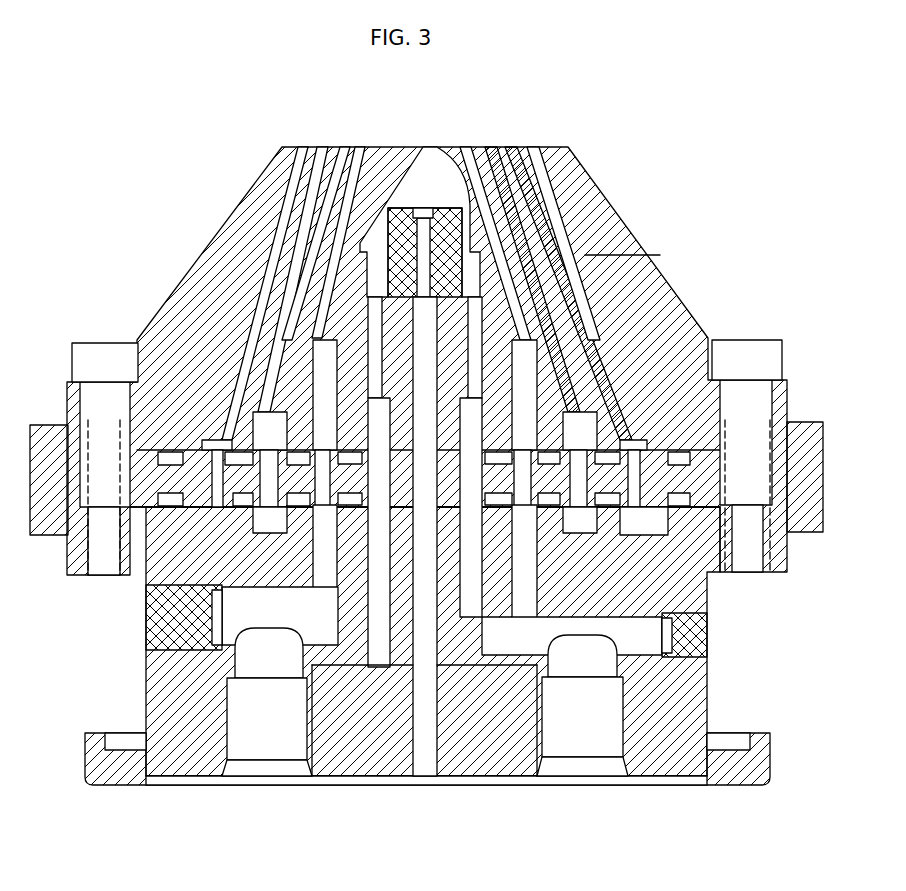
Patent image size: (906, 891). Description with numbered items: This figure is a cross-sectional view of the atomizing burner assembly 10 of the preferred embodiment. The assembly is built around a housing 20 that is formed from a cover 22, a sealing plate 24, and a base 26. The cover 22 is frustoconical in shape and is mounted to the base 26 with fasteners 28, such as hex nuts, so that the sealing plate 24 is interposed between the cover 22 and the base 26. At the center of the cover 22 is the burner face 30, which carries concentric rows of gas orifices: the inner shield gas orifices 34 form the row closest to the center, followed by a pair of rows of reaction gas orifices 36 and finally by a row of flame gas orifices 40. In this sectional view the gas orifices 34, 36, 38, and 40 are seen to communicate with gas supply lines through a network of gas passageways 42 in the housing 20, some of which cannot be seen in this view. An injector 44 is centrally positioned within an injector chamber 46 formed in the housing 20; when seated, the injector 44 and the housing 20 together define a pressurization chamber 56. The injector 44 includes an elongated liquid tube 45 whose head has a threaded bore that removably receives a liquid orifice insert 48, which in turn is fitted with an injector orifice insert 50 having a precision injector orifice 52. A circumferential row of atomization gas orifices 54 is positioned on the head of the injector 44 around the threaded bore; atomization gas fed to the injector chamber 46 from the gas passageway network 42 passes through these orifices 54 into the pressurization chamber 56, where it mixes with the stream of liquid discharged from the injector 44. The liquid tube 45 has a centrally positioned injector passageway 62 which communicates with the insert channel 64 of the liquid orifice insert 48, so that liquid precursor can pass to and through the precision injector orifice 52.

The atomizing burner assembly 10 is at (585, 85).
The housing 20 is at (700, 298).
The cover 22 is at (620, 245).
The sealing plate 24 is at (810, 422).
The base 26 is at (146, 680).
The fasteners 28 is at (90, 358).
The burner face 30 is at (465, 150).
The inner shield gas orifices 34 is at (380, 147).
The reaction gas orifices 36 is at (357, 147).
The gas orifices 38 is at (337, 147).
The flame gas orifices 40 is at (308, 147).
The gas passageways 42 is at (300, 335).
The injector 44 is at (390, 600).
The liquid tube 45 is at (460, 765).
The injector chamber 46 is at (470, 633).
The liquid orifice insert 48 is at (583, 205).
The injector orifice insert 50 is at (560, 185).
The injector orifice 52 is at (545, 168).
The atomization gas orifices 54 is at (330, 262).
The pressurization chamber 56 is at (300, 205).
The injector passageway 62 is at (427, 745).
The insert channel 64 is at (660, 255).